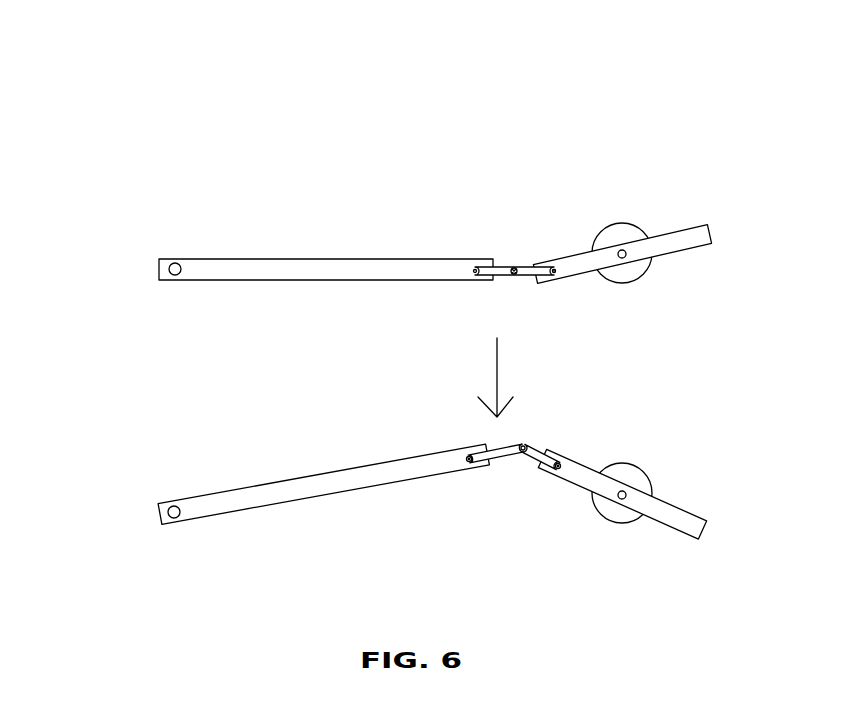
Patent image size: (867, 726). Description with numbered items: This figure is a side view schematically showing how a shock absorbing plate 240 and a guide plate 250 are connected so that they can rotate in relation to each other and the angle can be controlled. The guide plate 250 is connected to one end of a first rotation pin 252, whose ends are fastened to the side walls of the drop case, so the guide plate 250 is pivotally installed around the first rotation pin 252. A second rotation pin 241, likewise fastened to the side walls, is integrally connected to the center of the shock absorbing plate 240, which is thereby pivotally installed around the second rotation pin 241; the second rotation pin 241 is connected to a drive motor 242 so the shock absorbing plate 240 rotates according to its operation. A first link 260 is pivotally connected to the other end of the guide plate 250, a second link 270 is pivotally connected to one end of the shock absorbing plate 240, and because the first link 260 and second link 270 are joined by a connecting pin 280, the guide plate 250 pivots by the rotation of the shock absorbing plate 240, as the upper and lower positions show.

The shock absorbing plate 240 is at (677, 230).
The second rotation pin 241 is at (626, 254).
The drive motor 242 is at (613, 223).
The guide plate 250 is at (266, 259).
The first rotation pin 252 is at (169, 269).
The first link 260 is at (486, 267).
The second link 270 is at (533, 270).
The connecting pin 280 is at (513, 267).